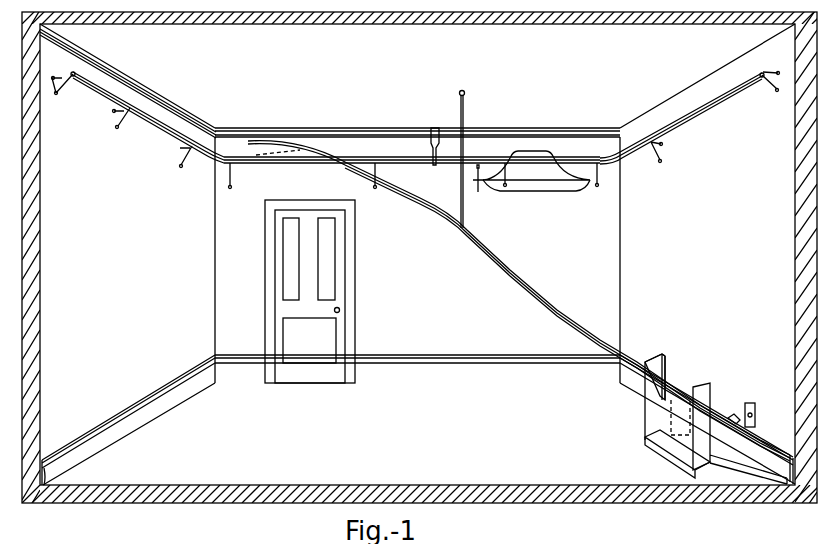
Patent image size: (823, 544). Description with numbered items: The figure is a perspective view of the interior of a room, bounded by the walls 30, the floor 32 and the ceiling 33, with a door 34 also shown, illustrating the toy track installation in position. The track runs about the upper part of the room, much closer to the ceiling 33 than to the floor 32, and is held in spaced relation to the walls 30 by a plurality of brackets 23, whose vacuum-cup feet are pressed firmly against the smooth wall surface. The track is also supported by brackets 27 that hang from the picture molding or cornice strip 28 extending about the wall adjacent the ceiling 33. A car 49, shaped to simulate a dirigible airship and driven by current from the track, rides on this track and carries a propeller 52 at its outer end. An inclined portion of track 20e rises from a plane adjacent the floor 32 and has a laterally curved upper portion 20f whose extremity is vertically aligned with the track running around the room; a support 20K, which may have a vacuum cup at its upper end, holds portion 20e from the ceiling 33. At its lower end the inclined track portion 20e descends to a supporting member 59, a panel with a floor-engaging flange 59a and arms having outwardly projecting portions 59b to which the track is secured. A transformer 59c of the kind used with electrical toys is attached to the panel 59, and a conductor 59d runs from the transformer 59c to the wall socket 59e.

The inclined track portion 20e is at (569, 323).
The laterally curved upper track portion 20f is at (320, 147).
The support 20K is at (464, 213).
The bracket 23 is at (182, 148).
The bracket 27 is at (440, 152).
The picture molding or cornice strip 28 is at (345, 127).
The wall 30 is at (40, 271).
The floor 32 is at (246, 486).
The ceiling 33 is at (548, 22).
The door 34 is at (338, 265).
The car 49 is at (540, 191).
The propeller 52 is at (478, 192).
The supporting member 59 is at (698, 404).
The floor-engaging flange 59a is at (672, 462).
The outwardly projecting portions 59b is at (648, 364).
The transformer 59c is at (730, 460).
The conductor 59d is at (734, 414).
The wall socket 59e is at (750, 403).